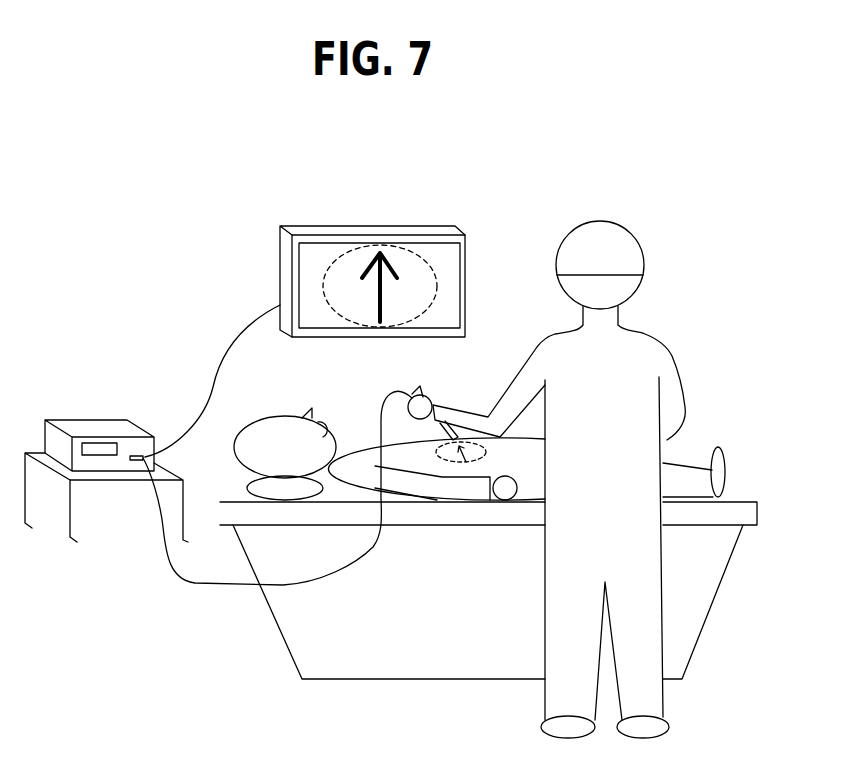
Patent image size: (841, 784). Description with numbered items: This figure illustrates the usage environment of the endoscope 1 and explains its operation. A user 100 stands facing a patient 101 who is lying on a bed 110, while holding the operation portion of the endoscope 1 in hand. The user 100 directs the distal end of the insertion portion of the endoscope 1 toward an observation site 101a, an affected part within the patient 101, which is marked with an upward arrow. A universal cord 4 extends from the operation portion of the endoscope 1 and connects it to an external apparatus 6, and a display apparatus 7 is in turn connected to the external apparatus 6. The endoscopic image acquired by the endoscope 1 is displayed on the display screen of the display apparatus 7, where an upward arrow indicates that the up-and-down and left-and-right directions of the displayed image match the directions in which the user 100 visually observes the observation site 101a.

The endoscope 1 is at (417, 388).
The universal cord 4 is at (173, 582).
The external apparatus 6 is at (93, 428).
The display apparatus 7 is at (280, 260).
The user 100 is at (640, 342).
The patient 101 is at (363, 458).
The observation site 101a is at (450, 463).
The bed 110 is at (732, 508).